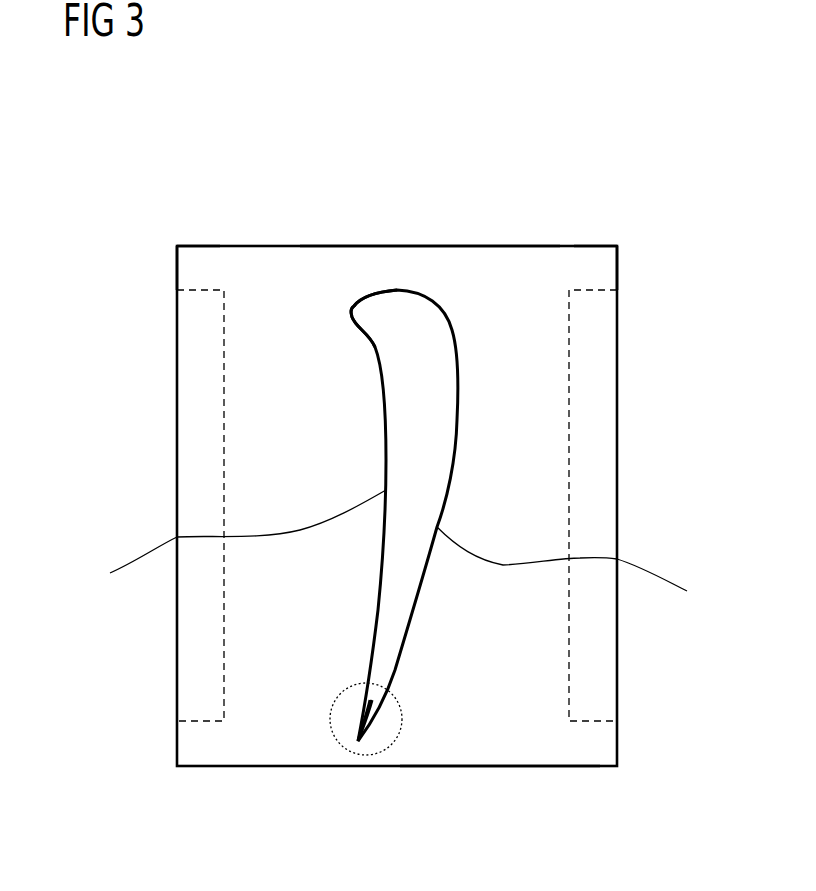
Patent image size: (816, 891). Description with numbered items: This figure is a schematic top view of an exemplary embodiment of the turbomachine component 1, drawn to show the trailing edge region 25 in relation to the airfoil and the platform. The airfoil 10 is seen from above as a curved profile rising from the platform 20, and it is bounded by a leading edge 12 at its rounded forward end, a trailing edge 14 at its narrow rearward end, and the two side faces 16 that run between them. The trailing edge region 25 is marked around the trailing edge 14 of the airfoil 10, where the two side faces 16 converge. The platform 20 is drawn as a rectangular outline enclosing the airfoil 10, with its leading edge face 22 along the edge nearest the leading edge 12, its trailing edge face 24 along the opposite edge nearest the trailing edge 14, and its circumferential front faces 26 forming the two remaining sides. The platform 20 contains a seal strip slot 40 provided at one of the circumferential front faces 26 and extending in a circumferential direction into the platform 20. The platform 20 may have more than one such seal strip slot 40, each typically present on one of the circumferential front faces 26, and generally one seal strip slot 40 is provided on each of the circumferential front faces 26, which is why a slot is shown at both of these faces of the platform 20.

The turbomachine component 1 is at (133, 168).
The airfoil 10 is at (448, 292).
The leading edge 12 is at (353, 304).
The trailing edge 14 is at (357, 740).
The side faces 16 is at (400, 549).
The platform 20 is at (617, 766).
The leading edge face 22 is at (428, 244).
The trailing edge face 24 is at (520, 767).
The trailing edge region 25 is at (330, 712).
The circumferential front faces 26 is at (177, 267).
The seal strip slot 40 is at (162, 444).